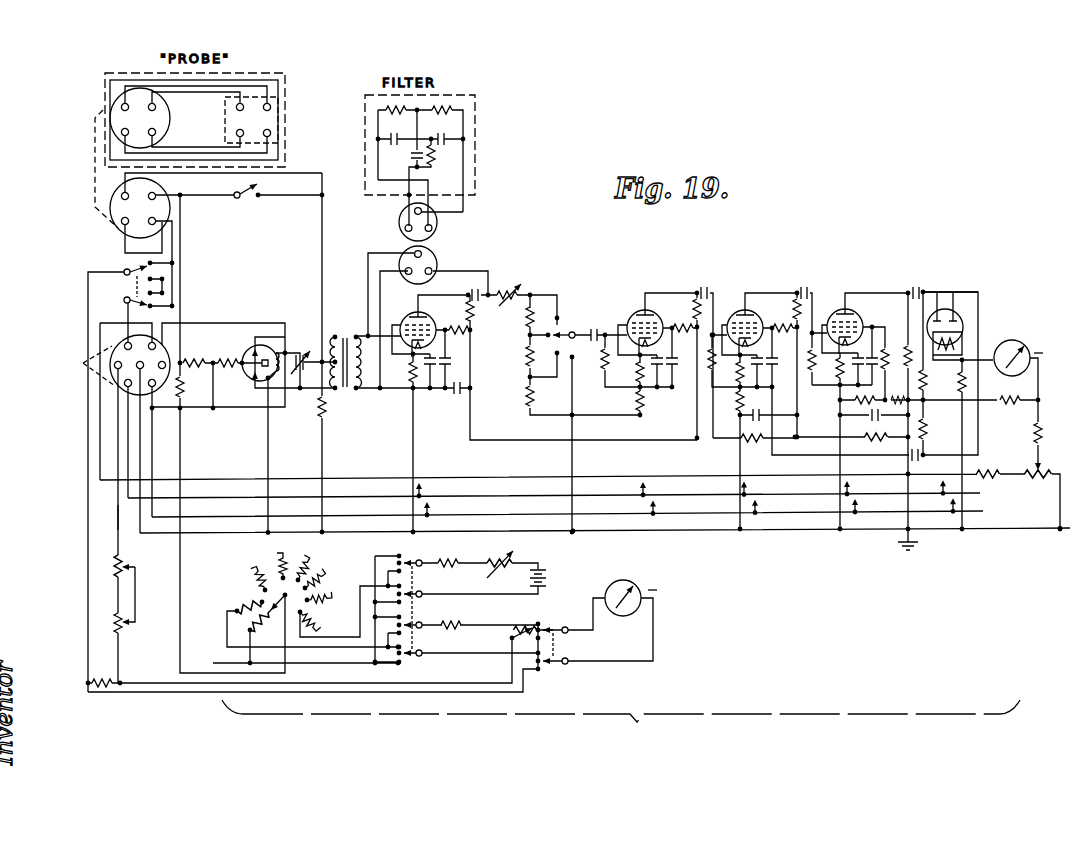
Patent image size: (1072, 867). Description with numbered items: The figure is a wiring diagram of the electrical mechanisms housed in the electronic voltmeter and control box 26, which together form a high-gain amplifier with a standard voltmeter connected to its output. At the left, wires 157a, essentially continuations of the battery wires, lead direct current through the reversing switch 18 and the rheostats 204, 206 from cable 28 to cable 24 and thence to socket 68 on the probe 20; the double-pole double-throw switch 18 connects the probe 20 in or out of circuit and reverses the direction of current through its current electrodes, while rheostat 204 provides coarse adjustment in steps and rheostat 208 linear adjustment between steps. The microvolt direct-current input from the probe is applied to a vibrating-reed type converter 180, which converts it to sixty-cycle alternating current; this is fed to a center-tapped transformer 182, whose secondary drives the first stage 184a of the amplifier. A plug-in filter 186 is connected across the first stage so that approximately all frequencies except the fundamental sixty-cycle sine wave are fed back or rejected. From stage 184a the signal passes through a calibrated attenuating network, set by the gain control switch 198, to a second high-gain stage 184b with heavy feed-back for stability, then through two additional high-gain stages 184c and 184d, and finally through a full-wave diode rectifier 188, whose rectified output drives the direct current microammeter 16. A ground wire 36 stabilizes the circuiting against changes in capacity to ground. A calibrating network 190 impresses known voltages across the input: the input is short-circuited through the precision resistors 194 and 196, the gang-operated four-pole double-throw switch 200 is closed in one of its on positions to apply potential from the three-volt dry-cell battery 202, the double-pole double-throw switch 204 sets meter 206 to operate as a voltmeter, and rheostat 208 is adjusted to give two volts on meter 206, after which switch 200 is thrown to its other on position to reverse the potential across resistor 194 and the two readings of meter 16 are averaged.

The socket 68 is at (112, 113).
The probe 20 is at (293, 90).
The cable 24 is at (95, 181).
The calibrating network 190 is at (236, 198).
The reversing switch 18 is at (184, 262).
The wires 157a is at (126, 305).
The cable 28 is at (83, 363).
The vibrating-reed type converter 180 is at (253, 343).
The precision resistor 194 is at (190, 361).
The precision resistor 196 is at (225, 361).
The center-tapped transformer 182 is at (352, 324).
The filter 186 is at (475, 141).
The first stage of the amplifier 184a is at (434, 321).
The second high-gain stage 184b is at (656, 310).
The third high-gain stage 184c is at (755, 310).
The fourth high-gain stage 184d is at (859, 311).
The full-wave diode rectifier 188 is at (945, 309).
The direct current microammeter 16 is at (1012, 340).
The gain control switch 198 is at (568, 334).
The ground wire 36 is at (900, 535).
The rheostat and double-pole double-throw switch 204 is at (565, 686).
The rheostat and meter 206 is at (656, 580).
The gang-operated four-pole double-throw switch 200 is at (406, 561).
The rheostat 208 is at (492, 559).
The three-volt dry-cell battery 202 is at (578, 569).
The electronic voltmeter and control box 26 is at (621, 724).